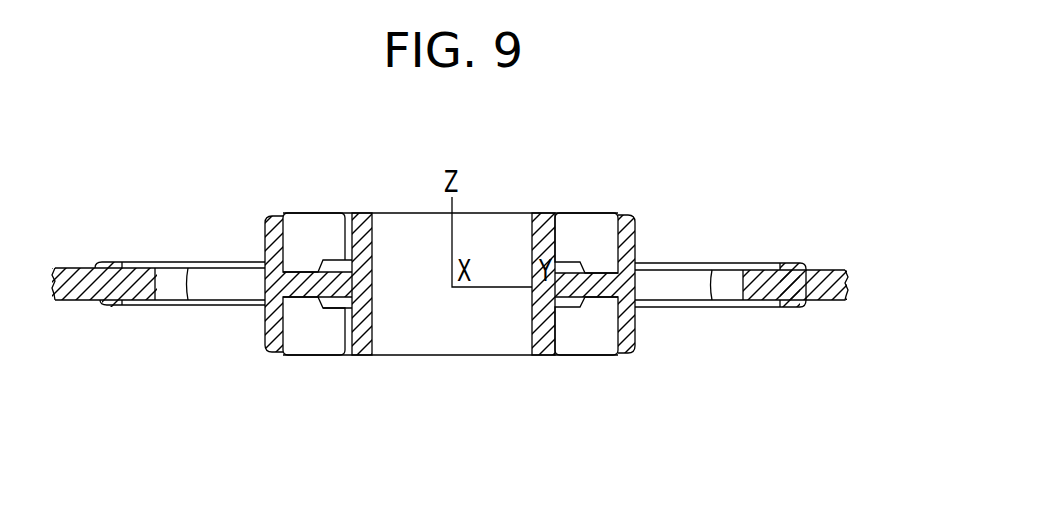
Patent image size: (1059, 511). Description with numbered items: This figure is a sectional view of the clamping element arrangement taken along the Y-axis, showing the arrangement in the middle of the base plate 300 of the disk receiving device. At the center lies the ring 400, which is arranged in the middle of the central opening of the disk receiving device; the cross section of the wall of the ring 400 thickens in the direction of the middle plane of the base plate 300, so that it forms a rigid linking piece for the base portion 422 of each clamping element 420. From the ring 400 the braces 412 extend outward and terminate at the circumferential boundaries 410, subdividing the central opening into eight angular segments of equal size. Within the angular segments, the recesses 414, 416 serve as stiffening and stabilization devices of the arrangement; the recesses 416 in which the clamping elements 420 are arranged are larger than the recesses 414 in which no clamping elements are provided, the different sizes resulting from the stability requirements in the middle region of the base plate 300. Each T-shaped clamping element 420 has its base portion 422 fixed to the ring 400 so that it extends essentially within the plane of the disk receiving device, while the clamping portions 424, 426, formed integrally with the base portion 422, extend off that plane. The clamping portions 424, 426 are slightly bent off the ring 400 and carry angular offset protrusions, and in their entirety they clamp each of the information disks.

The base plate 300 is at (85, 273).
The ring 400 is at (367, 213).
The circumferential boundaries 410 is at (795, 277).
The braces 412 is at (707, 263).
The recess 414 is at (672, 303).
The recess 416 is at (733, 307).
The clamping element 420 is at (573, 372).
The base portion 422 is at (582, 213).
The clamping portion 424 is at (637, 358).
The clamping portion 426 is at (633, 215).